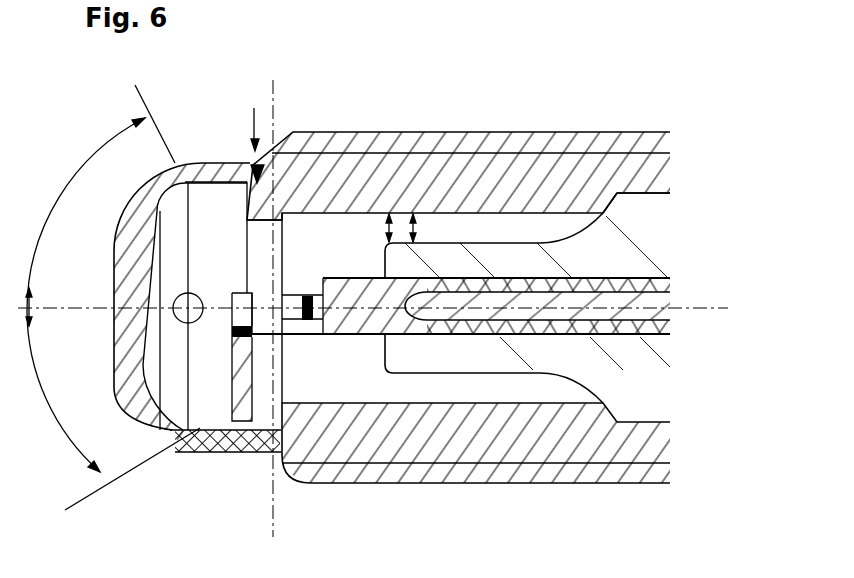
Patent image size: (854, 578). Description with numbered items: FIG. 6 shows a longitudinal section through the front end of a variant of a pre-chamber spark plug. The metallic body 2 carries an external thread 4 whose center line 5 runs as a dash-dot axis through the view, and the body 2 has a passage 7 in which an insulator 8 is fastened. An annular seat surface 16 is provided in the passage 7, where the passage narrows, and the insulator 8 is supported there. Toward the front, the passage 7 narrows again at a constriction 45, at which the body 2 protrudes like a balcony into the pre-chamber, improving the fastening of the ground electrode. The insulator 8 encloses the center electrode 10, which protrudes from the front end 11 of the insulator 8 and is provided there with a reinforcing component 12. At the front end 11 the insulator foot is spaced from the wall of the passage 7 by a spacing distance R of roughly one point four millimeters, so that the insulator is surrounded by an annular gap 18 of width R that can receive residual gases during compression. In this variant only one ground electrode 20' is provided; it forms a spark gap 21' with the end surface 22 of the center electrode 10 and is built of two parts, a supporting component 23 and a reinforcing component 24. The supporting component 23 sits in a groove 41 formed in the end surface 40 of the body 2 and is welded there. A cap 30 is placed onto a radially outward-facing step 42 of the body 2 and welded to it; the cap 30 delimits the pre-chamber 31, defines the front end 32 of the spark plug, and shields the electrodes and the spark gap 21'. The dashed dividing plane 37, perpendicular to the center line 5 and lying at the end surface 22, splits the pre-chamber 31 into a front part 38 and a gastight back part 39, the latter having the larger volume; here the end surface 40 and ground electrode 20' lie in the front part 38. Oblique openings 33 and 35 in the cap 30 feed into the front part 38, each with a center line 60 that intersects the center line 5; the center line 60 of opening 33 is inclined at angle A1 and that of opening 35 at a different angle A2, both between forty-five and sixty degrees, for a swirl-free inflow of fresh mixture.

The metallic body 2 is at (647, 450).
The external thread 4 is at (637, 480).
The center line 5 is at (713, 300).
The passage 7 is at (667, 193).
The insulator 8 is at (662, 232).
The center electrode 10 is at (358, 348).
The front end of the insulator 11 is at (389, 213).
The reinforcing component 12 is at (293, 323).
The annular seat surface 16 is at (603, 195).
The annular gap 18 is at (452, 213).
The ground electrode 20' is at (198, 498).
The spark gap 21' is at (296, 308).
The end surface of the center electrode 22 is at (280, 297).
The supporting component 23 is at (232, 393).
The reinforcing component 24 is at (232, 326).
The cap 30 is at (114, 335).
The pre-chamber 31 is at (168, 367).
The front end of the pre-chamber spark plug 32 is at (103, 272).
The opening 33 is at (185, 163).
The opening 35 is at (187, 432).
The dividing plane 37 is at (276, 80).
The front part of the pre-chamber 38 is at (222, 182).
The back part of the pre-chamber 39 is at (343, 227).
The end surface 40 is at (233, 202).
The groove 41 is at (249, 445).
The step 42 is at (262, 468).
The constriction 45 is at (283, 402).
The center line of the opening 60 is at (132, 93).
The angle A1 is at (86, 214).
The angle A2 is at (56, 380).
The spacing distance R is at (413, 213).